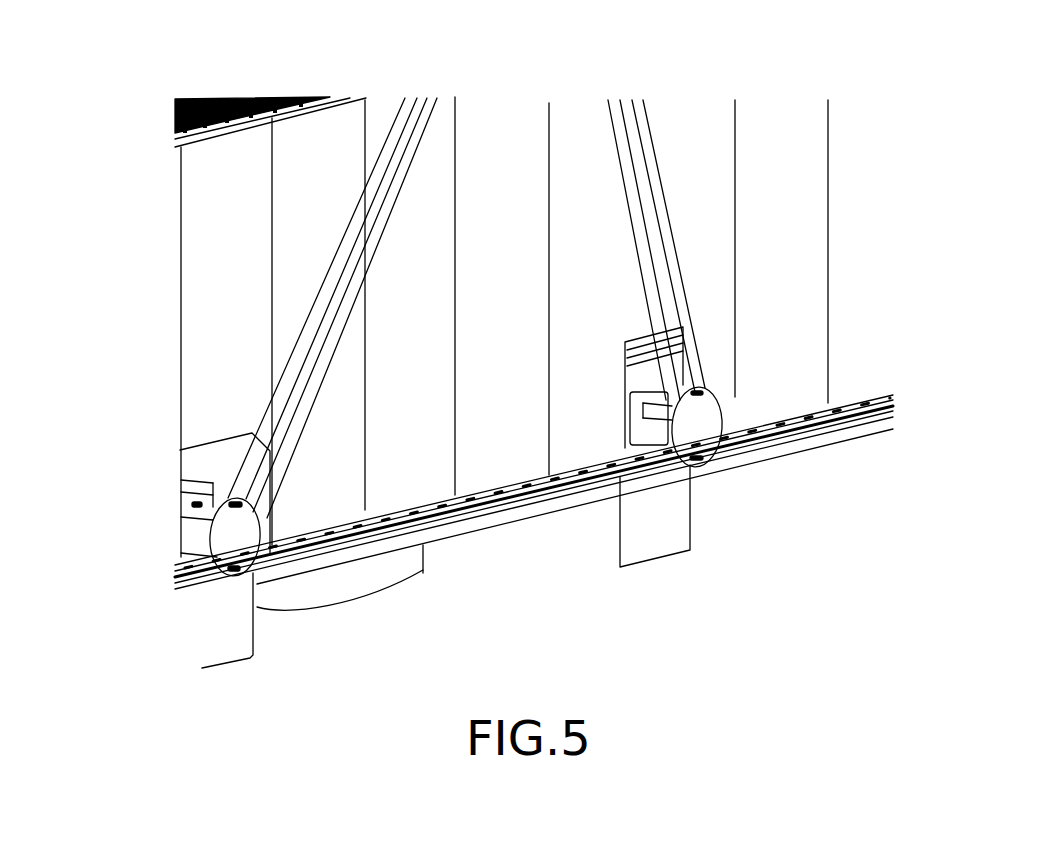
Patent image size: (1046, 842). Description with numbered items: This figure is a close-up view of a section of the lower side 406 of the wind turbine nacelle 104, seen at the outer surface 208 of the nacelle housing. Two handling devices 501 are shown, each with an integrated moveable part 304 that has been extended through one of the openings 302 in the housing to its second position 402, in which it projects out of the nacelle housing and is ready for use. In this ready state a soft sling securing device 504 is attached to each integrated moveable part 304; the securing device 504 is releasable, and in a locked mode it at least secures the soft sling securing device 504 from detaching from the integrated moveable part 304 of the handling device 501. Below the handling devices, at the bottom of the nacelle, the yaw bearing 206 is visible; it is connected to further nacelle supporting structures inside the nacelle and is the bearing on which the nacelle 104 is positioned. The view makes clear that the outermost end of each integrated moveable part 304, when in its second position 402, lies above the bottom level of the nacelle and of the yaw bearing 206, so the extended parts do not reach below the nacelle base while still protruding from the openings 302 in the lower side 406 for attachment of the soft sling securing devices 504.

The wind turbine nacelle 104 is at (152, 47).
The outer surface 208 is at (198, 247).
The lower side 406 is at (843, 168).
The soft sling securing device 504 is at (408, 101).
The openings 302 is at (203, 444).
The handling devices 501 is at (200, 503).
The second position 402 is at (722, 408).
The yaw bearing 206 is at (425, 572).
The integrated moveable part 304 is at (648, 427).